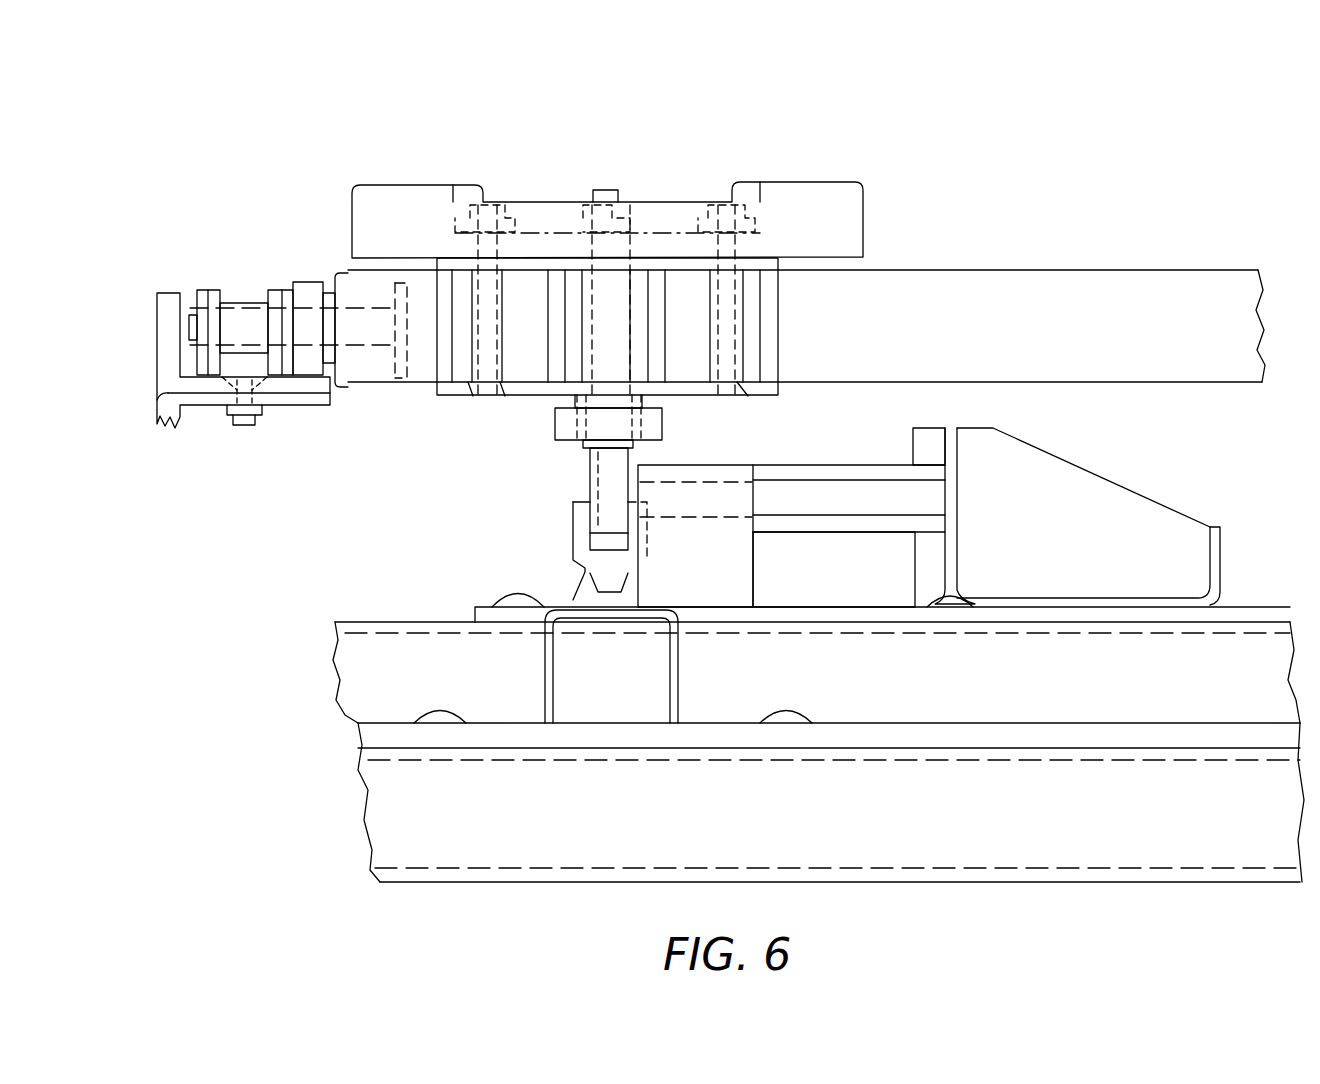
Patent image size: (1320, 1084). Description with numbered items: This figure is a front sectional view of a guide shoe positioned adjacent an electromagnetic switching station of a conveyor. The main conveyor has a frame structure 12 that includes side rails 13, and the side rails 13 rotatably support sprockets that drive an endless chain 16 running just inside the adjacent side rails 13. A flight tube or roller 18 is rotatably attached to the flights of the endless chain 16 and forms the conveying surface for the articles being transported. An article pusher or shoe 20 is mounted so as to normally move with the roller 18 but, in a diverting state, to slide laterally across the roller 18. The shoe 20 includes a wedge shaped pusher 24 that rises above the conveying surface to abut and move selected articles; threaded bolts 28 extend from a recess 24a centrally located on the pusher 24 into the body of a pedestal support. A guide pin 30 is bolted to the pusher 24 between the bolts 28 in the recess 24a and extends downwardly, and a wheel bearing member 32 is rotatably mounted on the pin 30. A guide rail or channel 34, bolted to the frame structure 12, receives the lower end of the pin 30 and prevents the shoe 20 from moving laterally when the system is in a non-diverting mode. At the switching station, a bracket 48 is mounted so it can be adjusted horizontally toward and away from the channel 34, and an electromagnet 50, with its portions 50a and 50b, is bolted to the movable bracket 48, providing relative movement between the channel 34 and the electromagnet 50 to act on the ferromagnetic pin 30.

The frame structure 12 is at (380, 622).
The side rail 13 is at (157, 382).
The endless chain 16 is at (217, 292).
The flight tube or roller 18 is at (920, 270).
The article pusher or shoe 20 is at (843, 150).
The wedge shaped pusher 24 is at (863, 203).
The recess 24a is at (720, 167).
The threaded bolt 28 is at (470, 222).
The guide pin 30 is at (590, 462).
The wheel bearing member 32 is at (555, 418).
The guide rail or channel 34 is at (573, 510).
The bracket 48 is at (1102, 478).
The electromagnet 50 is at (870, 463).
The support block 50a is at (803, 465).
The lower support block 50b is at (850, 530).